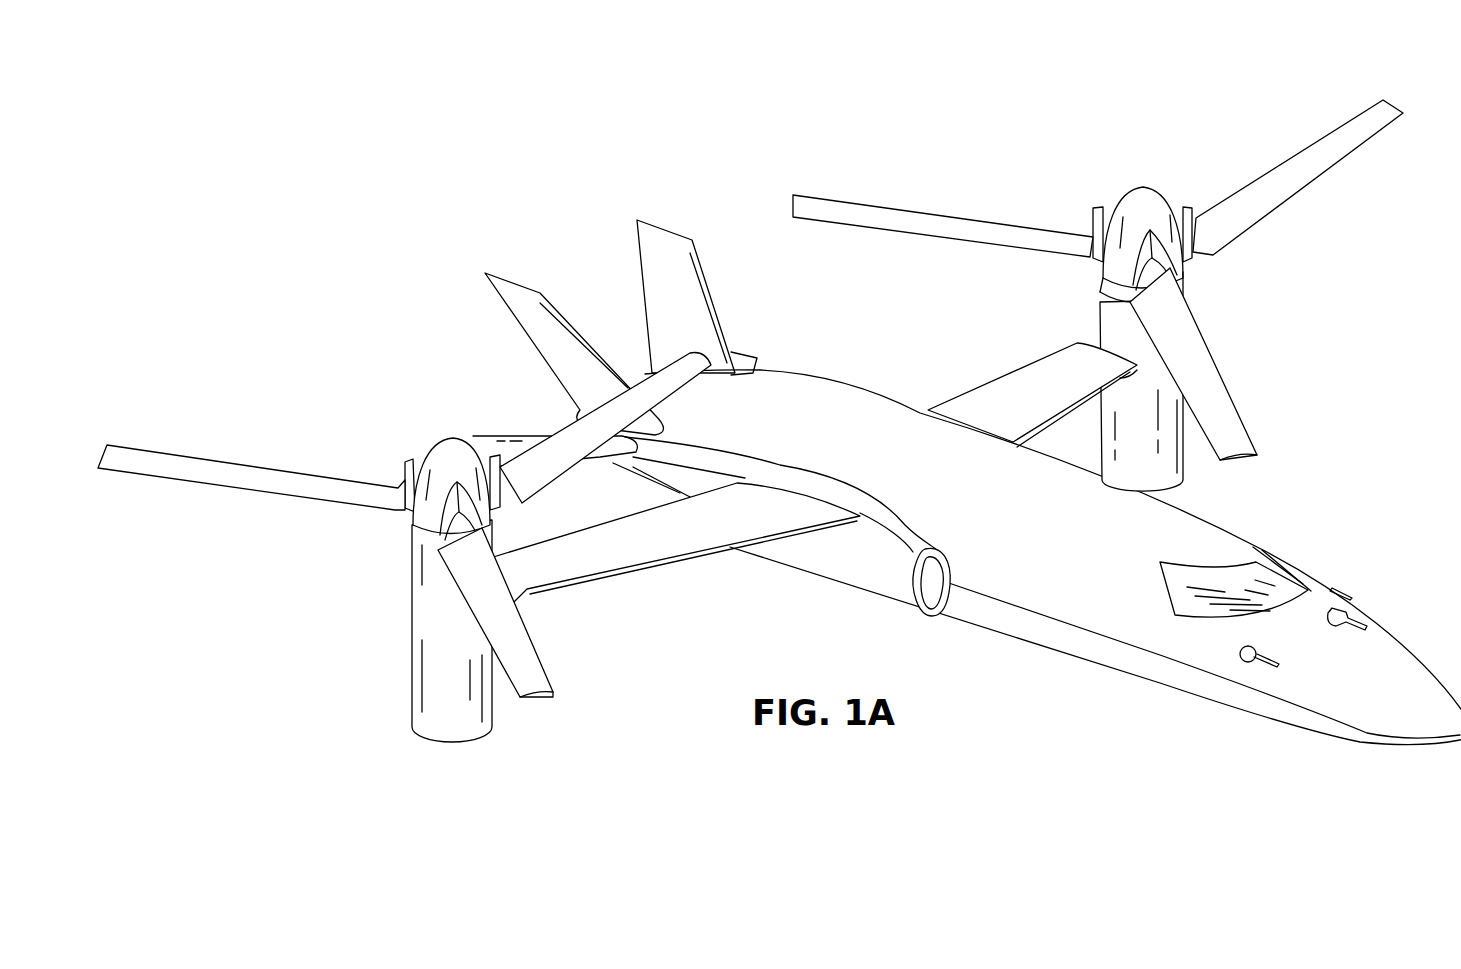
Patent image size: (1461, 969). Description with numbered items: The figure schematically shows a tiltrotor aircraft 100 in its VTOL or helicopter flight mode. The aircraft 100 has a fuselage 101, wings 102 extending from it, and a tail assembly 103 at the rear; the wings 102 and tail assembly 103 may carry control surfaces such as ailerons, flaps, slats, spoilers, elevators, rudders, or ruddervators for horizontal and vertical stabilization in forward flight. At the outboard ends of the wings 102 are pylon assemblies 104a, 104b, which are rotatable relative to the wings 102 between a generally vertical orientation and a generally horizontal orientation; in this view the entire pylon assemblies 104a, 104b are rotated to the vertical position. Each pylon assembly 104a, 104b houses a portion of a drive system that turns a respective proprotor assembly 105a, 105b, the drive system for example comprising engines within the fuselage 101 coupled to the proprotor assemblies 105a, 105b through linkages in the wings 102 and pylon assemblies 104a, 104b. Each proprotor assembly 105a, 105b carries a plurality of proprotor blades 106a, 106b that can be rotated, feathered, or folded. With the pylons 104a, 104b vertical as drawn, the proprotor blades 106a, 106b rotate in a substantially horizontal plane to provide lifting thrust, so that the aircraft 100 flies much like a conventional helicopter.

The tiltrotor aircraft 100 is at (530, 230).
The fuselage 101 is at (818, 380).
The wings 102 is at (988, 383).
The tail assembly 103 is at (637, 265).
The pylon assembly 104a is at (412, 603).
The pylon assembly 104b is at (1183, 470).
The proprotor assembly 105a is at (414, 423).
The proprotor assembly 105b is at (1176, 170).
The proprotor blades 106a is at (246, 488).
The proprotor blades 106b is at (920, 196).